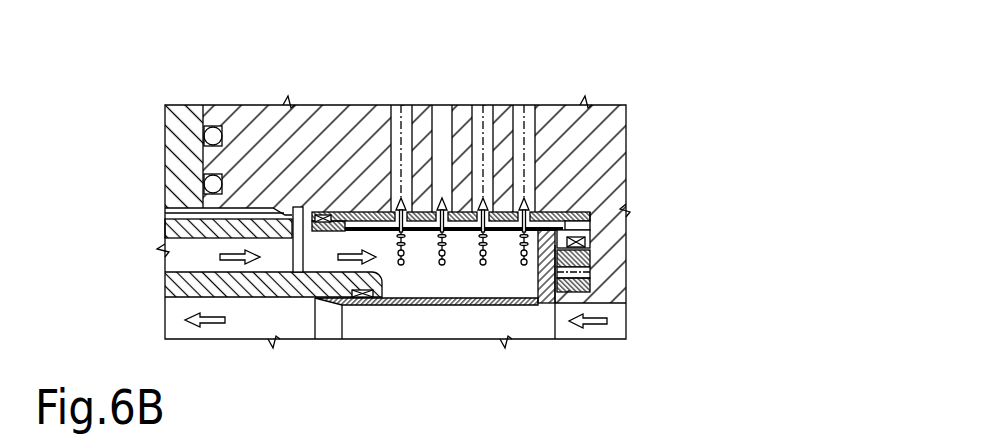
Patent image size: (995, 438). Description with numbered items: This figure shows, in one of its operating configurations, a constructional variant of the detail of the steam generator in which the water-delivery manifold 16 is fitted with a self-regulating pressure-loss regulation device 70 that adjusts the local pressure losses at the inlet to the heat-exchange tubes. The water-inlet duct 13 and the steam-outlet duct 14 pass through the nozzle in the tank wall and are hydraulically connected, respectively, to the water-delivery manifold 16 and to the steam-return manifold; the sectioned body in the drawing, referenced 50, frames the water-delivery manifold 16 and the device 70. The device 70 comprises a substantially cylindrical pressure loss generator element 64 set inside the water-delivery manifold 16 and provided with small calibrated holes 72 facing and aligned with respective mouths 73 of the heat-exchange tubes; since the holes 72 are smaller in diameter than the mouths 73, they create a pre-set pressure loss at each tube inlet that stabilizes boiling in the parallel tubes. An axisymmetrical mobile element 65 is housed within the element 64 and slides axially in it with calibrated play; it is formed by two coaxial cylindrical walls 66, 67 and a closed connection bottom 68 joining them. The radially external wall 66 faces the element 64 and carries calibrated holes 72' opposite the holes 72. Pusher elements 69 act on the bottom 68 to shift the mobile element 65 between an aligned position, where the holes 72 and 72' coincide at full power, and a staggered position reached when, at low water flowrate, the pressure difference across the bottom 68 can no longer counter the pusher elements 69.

The housing block 50 is at (310, 128).
The mouths of the heat-exchange tubes 73 is at (526, 100).
The calibrated holes 72 is at (527, 174).
The pressure loss generator element 64 is at (618, 196).
The calibrated holes of the mobile element 72' is at (545, 259).
The pusher elements 69 is at (587, 285).
The pressure-loss regulation device 70 is at (538, 313).
The closed connection bottom 68 is at (540, 263).
The axisymmetrical mobile element 65 is at (453, 305).
The cylindrical wall 67 is at (422, 232).
The radially external wall 66 is at (380, 302).
The water-inlet duct 13 is at (212, 268).
The steam-outlet duct 14 is at (274, 333).
The water-delivery manifold 16 is at (476, 276).